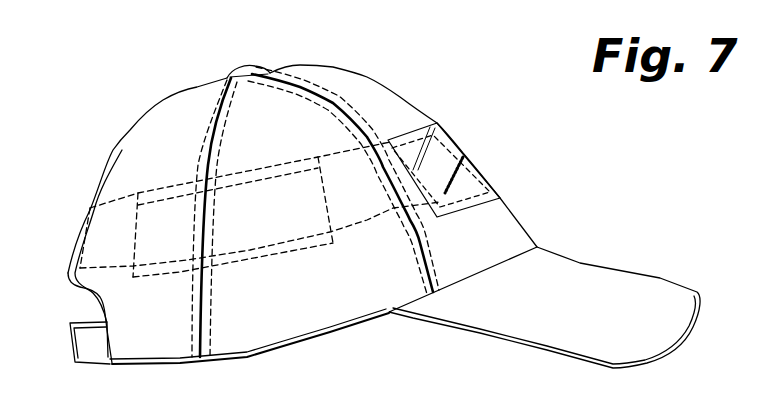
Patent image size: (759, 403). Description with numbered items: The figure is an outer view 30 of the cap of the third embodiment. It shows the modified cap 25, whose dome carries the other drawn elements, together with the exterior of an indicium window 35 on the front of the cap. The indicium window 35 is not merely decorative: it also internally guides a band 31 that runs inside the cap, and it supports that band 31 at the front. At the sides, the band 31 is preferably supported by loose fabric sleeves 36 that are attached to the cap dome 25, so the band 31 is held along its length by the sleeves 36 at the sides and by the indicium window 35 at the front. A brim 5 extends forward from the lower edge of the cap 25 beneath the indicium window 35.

The outer view 30 is at (108, 94).
The band 31 is at (90, 240).
The cap 25 is at (412, 94).
The indicium window 35 is at (440, 152).
The loose fabric sleeves 36 is at (241, 258).
The brim 5 is at (575, 275).